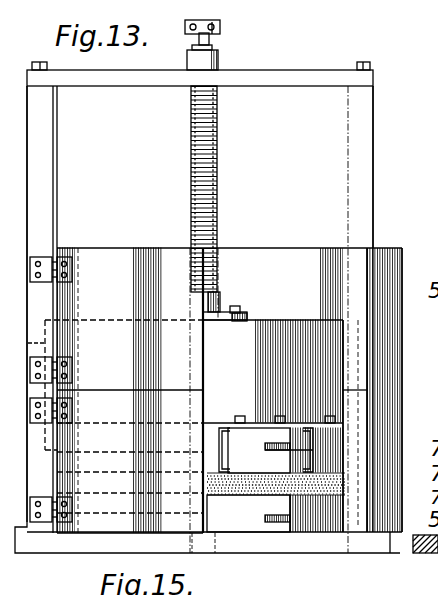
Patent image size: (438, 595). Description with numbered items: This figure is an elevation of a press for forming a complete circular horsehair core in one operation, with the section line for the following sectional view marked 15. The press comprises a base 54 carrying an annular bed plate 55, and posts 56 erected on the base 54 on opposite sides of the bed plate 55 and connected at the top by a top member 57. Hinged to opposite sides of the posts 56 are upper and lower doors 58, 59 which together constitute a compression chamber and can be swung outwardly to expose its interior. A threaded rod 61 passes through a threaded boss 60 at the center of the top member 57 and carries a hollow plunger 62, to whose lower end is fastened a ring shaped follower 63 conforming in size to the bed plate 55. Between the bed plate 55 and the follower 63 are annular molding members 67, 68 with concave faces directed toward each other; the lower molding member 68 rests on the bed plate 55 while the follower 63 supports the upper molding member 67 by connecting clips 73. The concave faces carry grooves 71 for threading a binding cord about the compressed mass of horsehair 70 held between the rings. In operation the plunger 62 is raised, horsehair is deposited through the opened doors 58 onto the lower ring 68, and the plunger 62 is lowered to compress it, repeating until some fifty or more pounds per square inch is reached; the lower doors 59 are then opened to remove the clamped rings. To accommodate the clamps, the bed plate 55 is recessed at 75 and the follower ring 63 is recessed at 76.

The hinged plate 15 is at (403, 345).
The base 54 is at (328, 543).
The bed plate 55 is at (243, 527).
The posts 56 is at (44, 165).
The top member 57 is at (296, 80).
The doors 58 is at (385, 252).
The doors 59 is at (403, 402).
The threaded boss 60 is at (220, 65).
The threaded rod 61 is at (218, 152).
The hollow plunger 62 is at (273, 322).
The ring shaped follower 63 is at (247, 440).
The annular molding member 67 is at (275, 461).
The annular molding member 68 is at (255, 491).
The mass of horsehair 70 is at (212, 487).
The grooves 71 is at (296, 492).
The connecting clips 73 is at (227, 445).
The recess 75 is at (273, 522).
The recess 76 is at (280, 420).